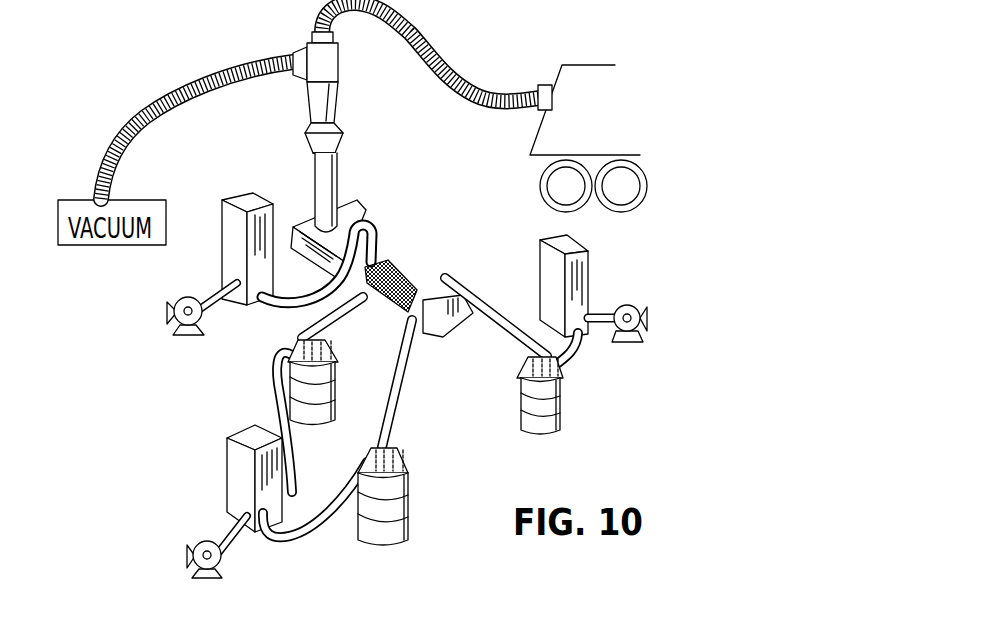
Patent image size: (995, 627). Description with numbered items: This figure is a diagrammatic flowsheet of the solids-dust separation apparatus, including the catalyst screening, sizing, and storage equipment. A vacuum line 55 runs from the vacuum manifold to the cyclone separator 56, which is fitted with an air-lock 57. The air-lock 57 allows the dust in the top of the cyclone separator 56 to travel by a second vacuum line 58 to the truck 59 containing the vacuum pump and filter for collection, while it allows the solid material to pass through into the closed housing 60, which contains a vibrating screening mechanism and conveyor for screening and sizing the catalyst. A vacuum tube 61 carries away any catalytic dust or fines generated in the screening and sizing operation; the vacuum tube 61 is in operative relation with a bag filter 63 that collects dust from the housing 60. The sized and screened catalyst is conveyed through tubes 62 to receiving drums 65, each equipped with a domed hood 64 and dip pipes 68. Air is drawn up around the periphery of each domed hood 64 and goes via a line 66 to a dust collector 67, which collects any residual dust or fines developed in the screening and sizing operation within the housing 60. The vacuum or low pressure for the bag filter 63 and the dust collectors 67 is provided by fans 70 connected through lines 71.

The vacuum line 55 is at (188, 93).
The cyclone separator 56 is at (330, 78).
The air-lock 57 is at (325, 146).
The vacuum line 58 is at (455, 75).
The wheeled supply unit 59 is at (592, 98).
The closed housing 60 is at (395, 259).
The vacuum tube 61 is at (370, 244).
The tubes 62 is at (341, 315).
The bag filter 63 is at (237, 257).
The domed hood 64 is at (327, 352).
The receiving drums 65 is at (336, 403).
The line 66 is at (572, 362).
The dust collector 67 is at (583, 292).
The dip pipes 68 is at (300, 338).
The fans 70 is at (166, 311).
The lines 71 is at (203, 311).